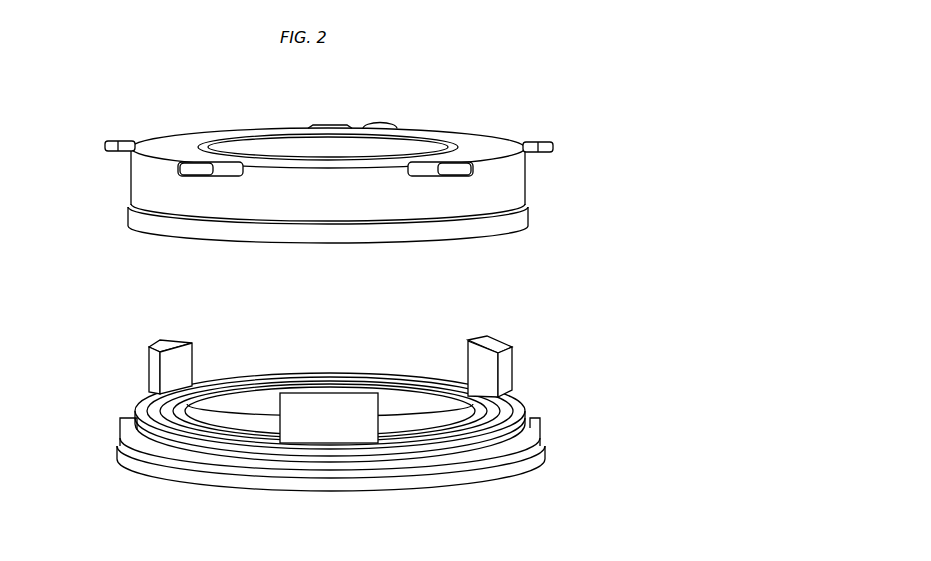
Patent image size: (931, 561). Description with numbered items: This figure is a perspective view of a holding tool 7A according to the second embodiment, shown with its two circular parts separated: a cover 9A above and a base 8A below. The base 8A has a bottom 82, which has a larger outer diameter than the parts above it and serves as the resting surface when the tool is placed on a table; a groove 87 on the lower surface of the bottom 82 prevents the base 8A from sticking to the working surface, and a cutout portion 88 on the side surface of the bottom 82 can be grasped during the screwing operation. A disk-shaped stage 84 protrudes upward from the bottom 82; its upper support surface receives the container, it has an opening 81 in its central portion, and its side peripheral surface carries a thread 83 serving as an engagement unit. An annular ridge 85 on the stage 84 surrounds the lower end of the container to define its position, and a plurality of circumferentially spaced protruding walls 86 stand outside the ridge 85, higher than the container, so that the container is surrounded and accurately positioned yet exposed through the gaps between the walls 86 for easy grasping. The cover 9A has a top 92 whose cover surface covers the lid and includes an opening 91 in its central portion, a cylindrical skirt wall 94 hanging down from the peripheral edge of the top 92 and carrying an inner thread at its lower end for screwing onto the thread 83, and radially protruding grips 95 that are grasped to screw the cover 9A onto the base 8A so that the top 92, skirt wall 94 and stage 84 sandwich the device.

The holding tool 7A is at (406, 308).
The cover 9A is at (360, 171).
The base 8A is at (362, 418).
The top 92 is at (174, 147).
The opening 91 is at (333, 155).
The cylindrical skirt wall 94 is at (134, 176).
The grips 95 is at (533, 139).
The protruding walls 86 is at (168, 345).
The opening 81 is at (395, 425).
The stage 84 is at (176, 406).
The ridge 85 is at (504, 404).
The thread 83 is at (121, 420).
The cutout portion 88 is at (544, 443).
The bottom 82 is at (486, 472).
The groove 87 is at (330, 490).